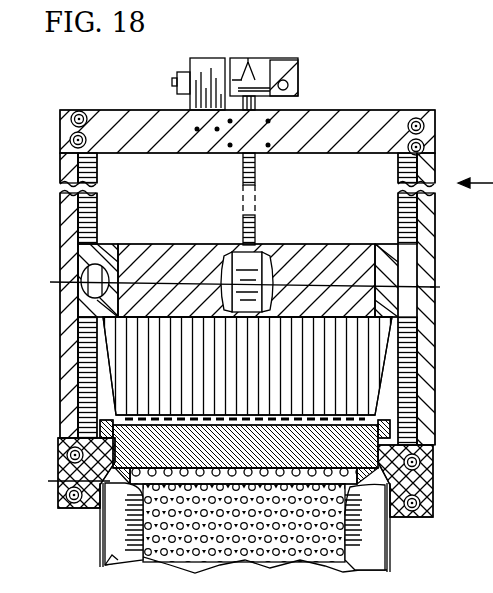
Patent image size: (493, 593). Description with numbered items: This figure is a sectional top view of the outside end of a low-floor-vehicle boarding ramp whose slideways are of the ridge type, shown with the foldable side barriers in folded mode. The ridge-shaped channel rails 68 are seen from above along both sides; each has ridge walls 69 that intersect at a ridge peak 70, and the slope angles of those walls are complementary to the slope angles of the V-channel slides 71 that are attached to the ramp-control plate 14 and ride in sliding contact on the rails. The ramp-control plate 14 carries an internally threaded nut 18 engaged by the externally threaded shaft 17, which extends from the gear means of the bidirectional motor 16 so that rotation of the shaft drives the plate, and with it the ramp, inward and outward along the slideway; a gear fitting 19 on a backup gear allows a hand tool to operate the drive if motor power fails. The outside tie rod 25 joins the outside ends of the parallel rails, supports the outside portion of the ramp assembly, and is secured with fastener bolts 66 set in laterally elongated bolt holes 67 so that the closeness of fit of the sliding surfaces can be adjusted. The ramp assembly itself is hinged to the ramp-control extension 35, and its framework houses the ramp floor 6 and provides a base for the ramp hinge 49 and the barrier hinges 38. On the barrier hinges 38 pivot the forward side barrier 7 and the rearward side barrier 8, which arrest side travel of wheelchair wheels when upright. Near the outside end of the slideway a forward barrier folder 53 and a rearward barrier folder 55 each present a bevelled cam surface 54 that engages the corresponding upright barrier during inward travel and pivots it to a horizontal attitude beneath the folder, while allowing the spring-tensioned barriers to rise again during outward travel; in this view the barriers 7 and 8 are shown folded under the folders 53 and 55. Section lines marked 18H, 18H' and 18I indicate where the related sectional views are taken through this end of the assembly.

The ramp floor 6 is at (345, 572).
The forward side barrier 7 is at (365, 549).
The rearward side barrier 8 is at (105, 562).
The ramp-control plate 14 is at (197, 251).
The bidirectional motor 16 is at (236, 58).
The externally threaded shaft 17 is at (256, 177).
The internally threaded nut 18 is at (268, 253).
The section line 18H is at (222, 281).
The section line 18H' is at (460, 288).
The section line 18I is at (62, 481).
The gear fitting 19 is at (275, 58).
The outside tie rod 25 is at (336, 118).
The ramp-control extension 35 is at (305, 382).
The barrier hinge 38 is at (390, 531).
The ramp hinge 49 is at (330, 416).
The forward barrier folder 53 is at (396, 438).
The cam surface 54 is at (92, 490).
The rearward barrier folder 55 is at (60, 489).
The fastener bolts 66 is at (78, 116).
The laterally elongated bolt holes 67 is at (90, 130).
The ridge-shaped channel rails 68 is at (65, 174).
The ridge walls 69 is at (99, 243).
The ridge peak 70 is at (97, 181).
The V-channel slides 71 is at (108, 248).